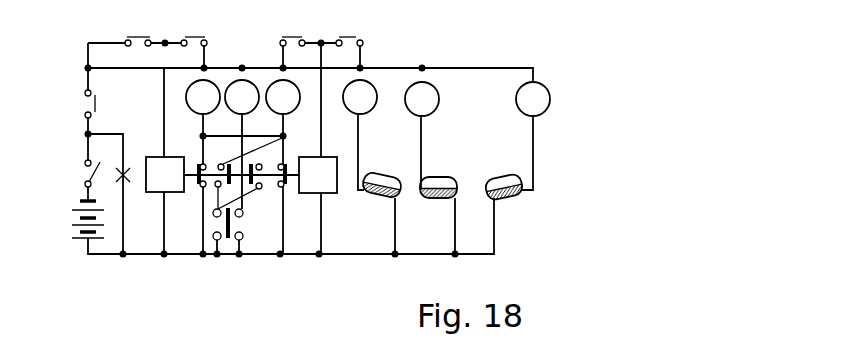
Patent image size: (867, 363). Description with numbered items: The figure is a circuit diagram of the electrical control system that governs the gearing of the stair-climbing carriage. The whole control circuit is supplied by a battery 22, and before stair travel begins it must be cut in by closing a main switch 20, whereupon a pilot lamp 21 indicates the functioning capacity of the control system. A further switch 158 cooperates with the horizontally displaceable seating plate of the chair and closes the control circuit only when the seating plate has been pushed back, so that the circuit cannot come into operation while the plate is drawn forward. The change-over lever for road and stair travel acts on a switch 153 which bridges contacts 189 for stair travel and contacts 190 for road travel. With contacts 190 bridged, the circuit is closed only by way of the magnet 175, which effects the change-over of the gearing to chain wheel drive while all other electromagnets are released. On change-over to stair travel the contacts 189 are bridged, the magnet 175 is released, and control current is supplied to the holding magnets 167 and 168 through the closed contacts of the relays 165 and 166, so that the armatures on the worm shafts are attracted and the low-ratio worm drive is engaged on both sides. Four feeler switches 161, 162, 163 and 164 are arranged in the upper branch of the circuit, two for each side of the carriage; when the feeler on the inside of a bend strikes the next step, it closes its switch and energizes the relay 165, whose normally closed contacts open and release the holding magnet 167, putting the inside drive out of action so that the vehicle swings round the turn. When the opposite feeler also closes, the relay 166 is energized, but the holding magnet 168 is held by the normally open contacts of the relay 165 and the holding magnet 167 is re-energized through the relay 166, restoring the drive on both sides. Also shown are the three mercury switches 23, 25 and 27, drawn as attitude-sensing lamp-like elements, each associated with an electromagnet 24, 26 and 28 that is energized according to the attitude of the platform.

The main switch 20 is at (85, 170).
The pilot lamp 21 is at (125, 178).
The battery 22 is at (80, 228).
The mercury switch 23 is at (438, 176).
The electromagnet 24 is at (422, 99).
The mercury switch 25 is at (504, 177).
The electromagnet 26 is at (533, 99).
The mercury switch 27 is at (381, 176).
The electromagnet 28 is at (360, 97).
The switch 153 is at (217, 260).
The switch 158 is at (95, 103).
The feeler switch 161 is at (138, 28).
The feeler switch 162 is at (292, 28).
The feeler switch 163 is at (194, 28).
The feeler switch 164 is at (349, 28).
The relay 165 is at (165, 174).
The relay 166 is at (318, 175).
The holding magnet 167 is at (203, 97).
The holding magnet 168 is at (283, 97).
The magnet 175 is at (242, 97).
The contacts 189 is at (213, 239).
The contacts 190 is at (243, 239).